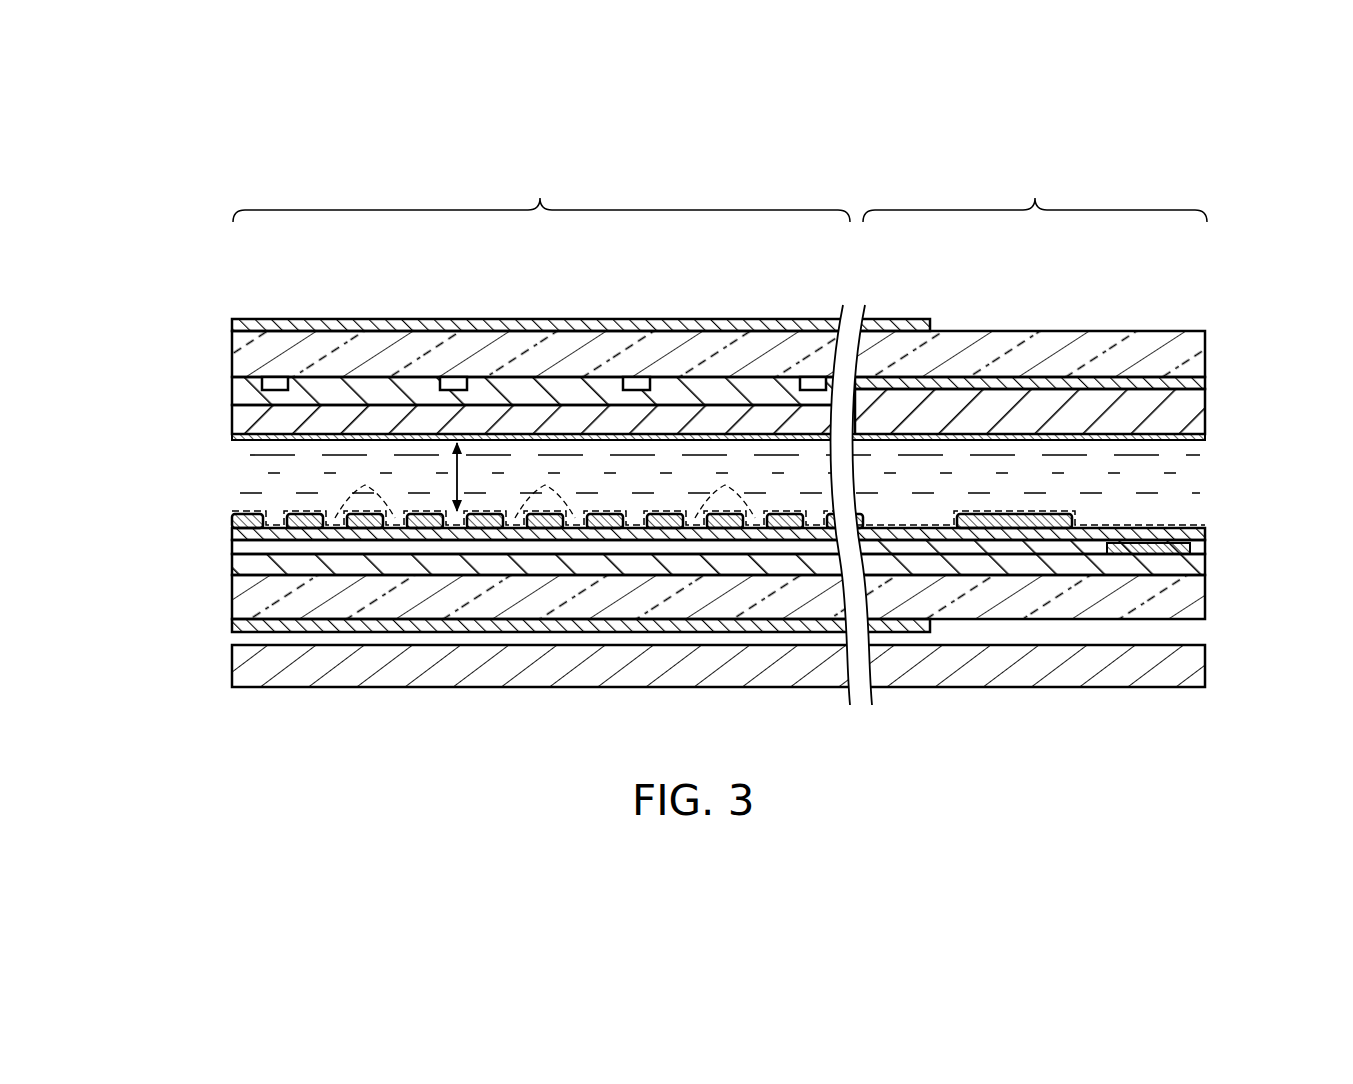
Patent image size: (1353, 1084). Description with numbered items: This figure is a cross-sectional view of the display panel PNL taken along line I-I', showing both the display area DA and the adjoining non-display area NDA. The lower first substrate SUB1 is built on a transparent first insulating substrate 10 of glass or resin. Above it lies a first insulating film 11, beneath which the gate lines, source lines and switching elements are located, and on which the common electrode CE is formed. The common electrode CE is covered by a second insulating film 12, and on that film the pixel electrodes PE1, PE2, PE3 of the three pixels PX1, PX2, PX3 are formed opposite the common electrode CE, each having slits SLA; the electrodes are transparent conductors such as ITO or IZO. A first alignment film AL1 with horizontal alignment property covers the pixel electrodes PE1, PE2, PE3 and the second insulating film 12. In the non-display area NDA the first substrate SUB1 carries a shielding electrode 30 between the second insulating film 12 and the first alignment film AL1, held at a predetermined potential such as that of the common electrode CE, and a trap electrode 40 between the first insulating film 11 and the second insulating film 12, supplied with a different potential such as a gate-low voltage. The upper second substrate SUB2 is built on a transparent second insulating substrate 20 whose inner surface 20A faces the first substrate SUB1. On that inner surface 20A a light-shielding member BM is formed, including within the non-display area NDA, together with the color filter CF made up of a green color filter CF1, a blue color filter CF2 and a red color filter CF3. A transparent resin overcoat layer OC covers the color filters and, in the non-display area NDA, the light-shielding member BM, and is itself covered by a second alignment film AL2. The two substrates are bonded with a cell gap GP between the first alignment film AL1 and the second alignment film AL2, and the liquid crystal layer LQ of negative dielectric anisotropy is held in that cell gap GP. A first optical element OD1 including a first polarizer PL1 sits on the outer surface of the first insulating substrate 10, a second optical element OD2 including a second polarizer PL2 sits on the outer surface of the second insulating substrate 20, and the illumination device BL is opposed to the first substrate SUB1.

The display area DA is at (541, 197).
The non-display area NDA is at (1035, 197).
The line I-I' I is at (536, 237).
The second optical element OD2 is at (245, 326).
The second polarizer PL2 is at (535, 323).
The second insulating substrate 20 is at (245, 352).
The inner surface 20A is at (327, 392).
The second substrate SUB2 is at (1220, 383).
The color filter CF is at (228, 394).
The color filter CF1 is at (365, 400).
The color filter CF2 is at (540, 400).
The color filter CF3 is at (720, 400).
The light-shielding member BM is at (277, 378).
The overcoat layer OC is at (245, 418).
The second alignment film AL2 is at (245, 438).
The liquid crystal layer LQ is at (1195, 473).
The cell gap GP is at (457, 516).
The slits SLA is at (545, 489).
The pixel electrode PE1 is at (360, 528).
The pixel electrode PE2 is at (542, 528).
The pixel electrode PE3 is at (723, 528).
The first alignment film AL1 is at (245, 516).
The second insulating film 12 is at (245, 536).
The common electrode CE is at (245, 547).
The first insulating film 11 is at (245, 565).
The first insulating substrate 10 is at (245, 600).
The first substrate SUB1 is at (1212, 562).
The first optical element OD1 is at (245, 626).
The first polarizer PL1 is at (529, 648).
The illumination device BL is at (245, 665).
The display panel PNL is at (1220, 323).
The shielding electrode 30 is at (1013, 530).
The trap electrode 40 is at (1135, 555).
The first pixel PX1 is at (406, 302).
The second pixel PX2 is at (586, 302).
The third pixel PX3 is at (768, 302).